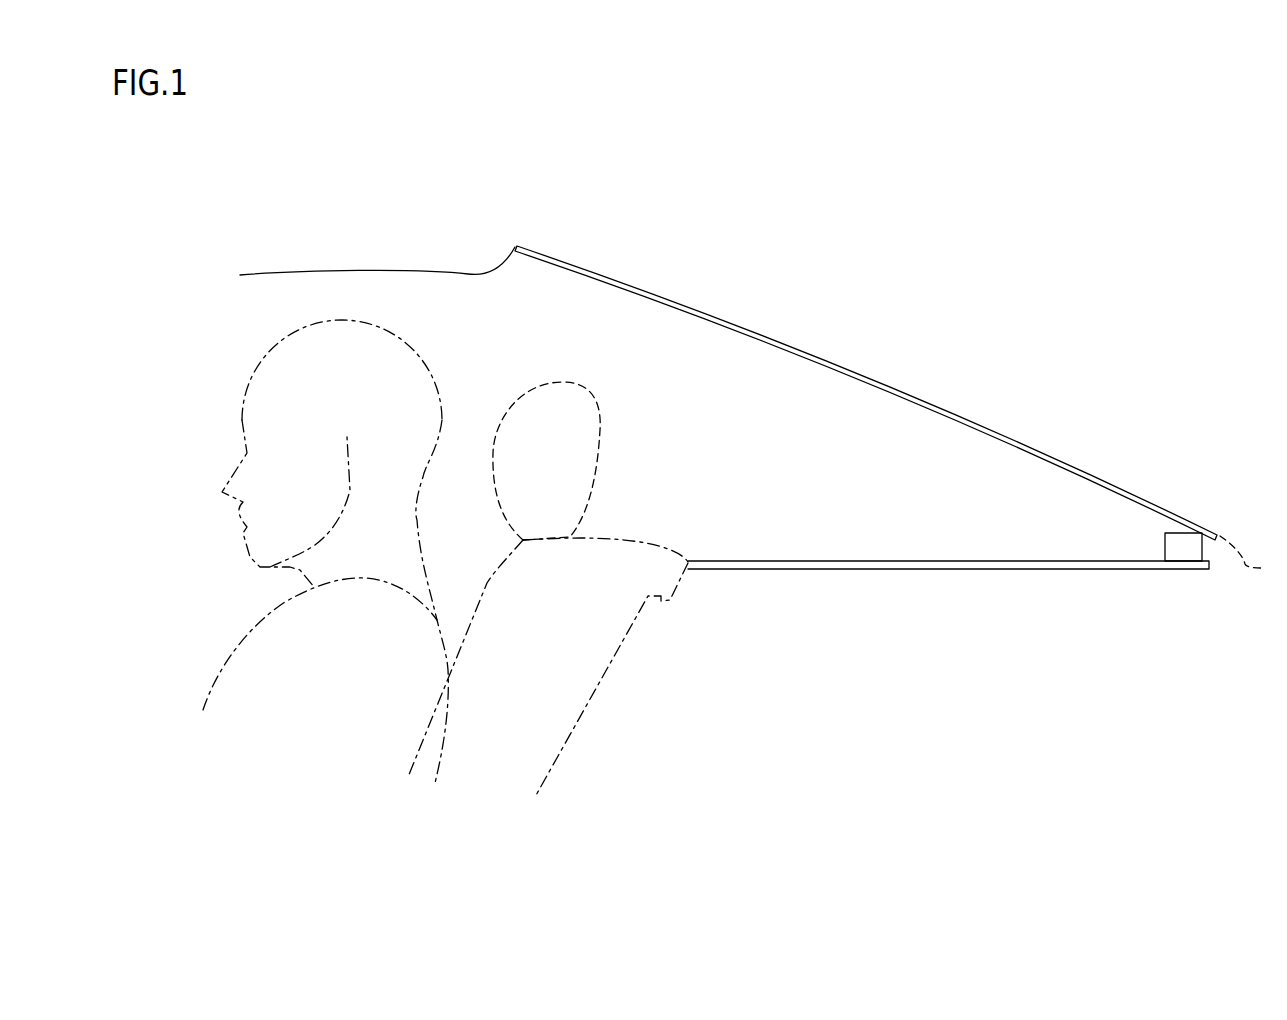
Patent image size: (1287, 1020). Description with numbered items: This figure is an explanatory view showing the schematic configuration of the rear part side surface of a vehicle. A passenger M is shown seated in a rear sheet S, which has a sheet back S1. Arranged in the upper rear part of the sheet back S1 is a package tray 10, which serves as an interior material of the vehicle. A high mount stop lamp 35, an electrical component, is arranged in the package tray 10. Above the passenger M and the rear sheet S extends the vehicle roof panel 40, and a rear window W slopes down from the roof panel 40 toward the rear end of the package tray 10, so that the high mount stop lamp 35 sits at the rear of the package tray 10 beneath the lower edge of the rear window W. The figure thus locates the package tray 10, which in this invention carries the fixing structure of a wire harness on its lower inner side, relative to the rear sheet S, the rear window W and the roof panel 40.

The vehicle roof panel 40 is at (307, 268).
The rear window W is at (1050, 458).
The package tray 10 is at (1142, 569).
The high mount stop lamp 35 is at (1187, 550).
The rear sheet S is at (524, 380).
The sheet back S1 is at (633, 550).
The passenger M is at (280, 358).